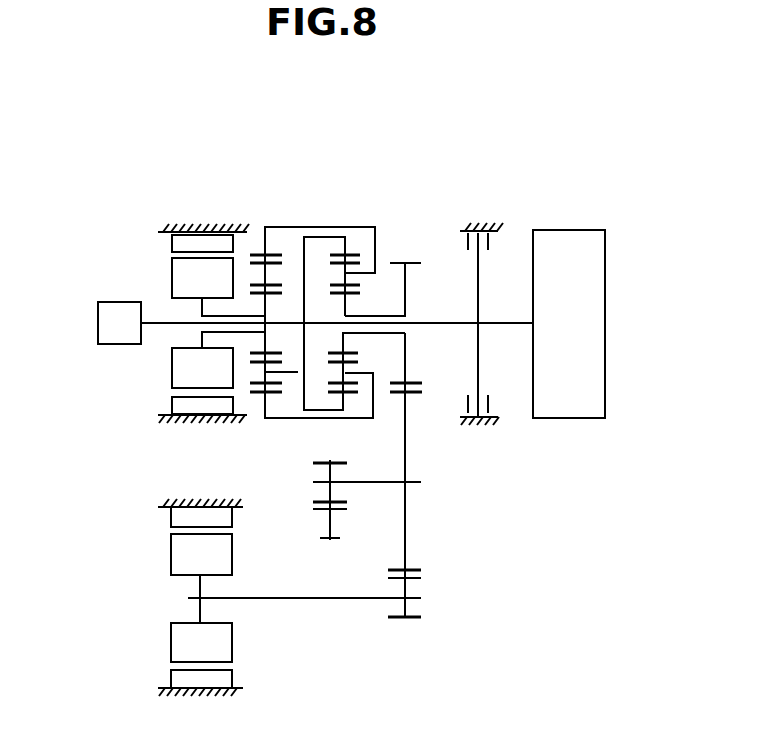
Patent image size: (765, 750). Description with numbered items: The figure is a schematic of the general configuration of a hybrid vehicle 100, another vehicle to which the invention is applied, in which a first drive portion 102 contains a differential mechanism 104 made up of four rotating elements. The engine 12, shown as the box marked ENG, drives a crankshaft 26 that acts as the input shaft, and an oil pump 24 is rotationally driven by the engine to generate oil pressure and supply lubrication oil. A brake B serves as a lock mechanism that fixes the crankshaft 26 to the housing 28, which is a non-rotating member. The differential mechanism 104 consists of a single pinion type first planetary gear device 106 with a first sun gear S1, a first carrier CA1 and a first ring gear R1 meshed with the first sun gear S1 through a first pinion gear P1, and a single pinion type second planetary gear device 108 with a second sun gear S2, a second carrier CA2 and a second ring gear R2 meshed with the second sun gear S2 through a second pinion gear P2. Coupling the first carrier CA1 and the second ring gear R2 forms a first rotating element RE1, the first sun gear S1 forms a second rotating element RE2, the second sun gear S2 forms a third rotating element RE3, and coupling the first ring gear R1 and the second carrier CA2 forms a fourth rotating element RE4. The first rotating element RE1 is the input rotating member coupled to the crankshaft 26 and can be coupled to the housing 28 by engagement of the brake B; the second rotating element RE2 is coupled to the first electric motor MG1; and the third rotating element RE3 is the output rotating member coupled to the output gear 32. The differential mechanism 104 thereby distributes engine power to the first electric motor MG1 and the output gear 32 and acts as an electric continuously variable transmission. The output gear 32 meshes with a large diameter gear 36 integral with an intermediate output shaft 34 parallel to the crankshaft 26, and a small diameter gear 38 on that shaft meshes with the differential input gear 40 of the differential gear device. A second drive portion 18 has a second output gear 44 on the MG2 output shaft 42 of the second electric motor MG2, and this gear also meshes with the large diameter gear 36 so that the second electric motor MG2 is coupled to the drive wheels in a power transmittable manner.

The hybrid vehicle 100 is at (527, 89).
The differential mechanism 104 is at (333, 152).
The first planetary gear device 106 is at (270, 221).
The second planetary gear device 108 is at (343, 221).
The housing 28 is at (470, 228).
The crankshaft 26 is at (510, 325).
The oil pump 24 is at (120, 345).
The engine 12 is at (563, 417).
The first drive portion 102 is at (497, 431).
The brake B is at (460, 415).
The output gear 32 is at (412, 381).
The intermediate output shaft 34 is at (368, 484).
The large diameter gear 36 is at (410, 398).
The small diameter gear 38 is at (336, 465).
The differential input gear 40 is at (327, 513).
The MG2 output shaft 42 is at (288, 600).
The second output gear 44 is at (410, 583).
The second drive portion 18 is at (443, 610).
The first rotating element RE1 is at (303, 267).
The second rotating element RE2 is at (242, 313).
The third rotating element RE3 is at (375, 311).
The fourth rotating element RE4 is at (283, 227).
The first sun gear S1 is at (267, 352).
The first carrier CA1 is at (293, 348).
The first pinion gear P1 is at (288, 378).
The first ring gear R1 is at (256, 393).
The second sun gear S2 is at (340, 352).
The second carrier CA2 is at (383, 358).
The second pinion gear P2 is at (340, 381).
The second ring gear R2 is at (343, 388).
The first electric motor MG1 is at (211, 323).
The second electric motor MG2 is at (200, 597).
The engine ENG is at (569, 324).